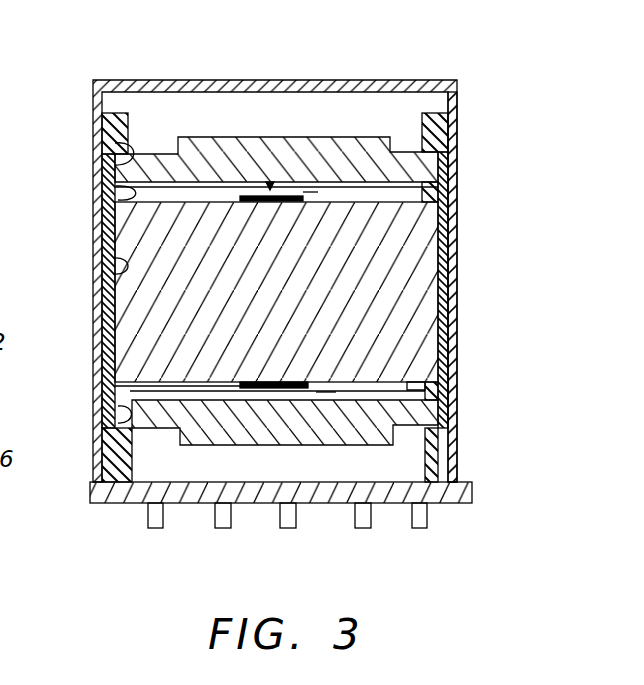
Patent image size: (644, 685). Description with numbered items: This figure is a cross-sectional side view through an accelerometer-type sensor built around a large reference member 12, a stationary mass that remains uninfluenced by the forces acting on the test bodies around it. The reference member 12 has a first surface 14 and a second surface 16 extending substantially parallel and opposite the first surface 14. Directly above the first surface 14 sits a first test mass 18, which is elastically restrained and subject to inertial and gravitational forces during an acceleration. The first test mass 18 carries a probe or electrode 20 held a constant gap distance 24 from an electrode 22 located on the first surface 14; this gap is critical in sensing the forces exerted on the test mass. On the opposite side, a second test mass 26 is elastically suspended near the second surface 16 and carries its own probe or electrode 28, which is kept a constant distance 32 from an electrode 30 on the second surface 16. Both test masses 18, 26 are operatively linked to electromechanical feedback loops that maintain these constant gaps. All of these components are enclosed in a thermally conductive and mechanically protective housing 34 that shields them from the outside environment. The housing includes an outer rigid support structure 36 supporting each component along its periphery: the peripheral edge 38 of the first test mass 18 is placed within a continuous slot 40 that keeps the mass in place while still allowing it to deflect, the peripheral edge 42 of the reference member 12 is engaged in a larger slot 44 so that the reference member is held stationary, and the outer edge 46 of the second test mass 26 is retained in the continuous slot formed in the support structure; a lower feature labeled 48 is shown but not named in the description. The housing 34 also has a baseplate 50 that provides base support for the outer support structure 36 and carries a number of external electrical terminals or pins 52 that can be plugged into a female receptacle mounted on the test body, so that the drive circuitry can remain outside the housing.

The reference member 12 is at (372, 277).
The first surface 14 is at (122, 192).
The second surface 16 is at (442, 384).
The first test mass 18 is at (455, 165).
The probe or electrode 20 is at (270, 186).
The electrode 22 is at (286, 197).
The gap distance 24 is at (305, 192).
The second test mass 26 is at (296, 397).
The probe or electrode 28 is at (243, 394).
The electrode 30 is at (130, 389).
The constant distance 32 is at (320, 393).
The housing 34 is at (160, 82).
The outer rigid support structure 36 is at (447, 236).
The peripheral edge 38 is at (147, 154).
The continuous slot 40 is at (118, 145).
The peripheral edge 42 is at (440, 187).
The larger slot 44 is at (116, 283).
The outer edge 46 is at (442, 384).
The lower left block 48 is at (122, 419).
The baseplate 50 is at (450, 504).
The external electrical terminals or pins 52 is at (413, 530).